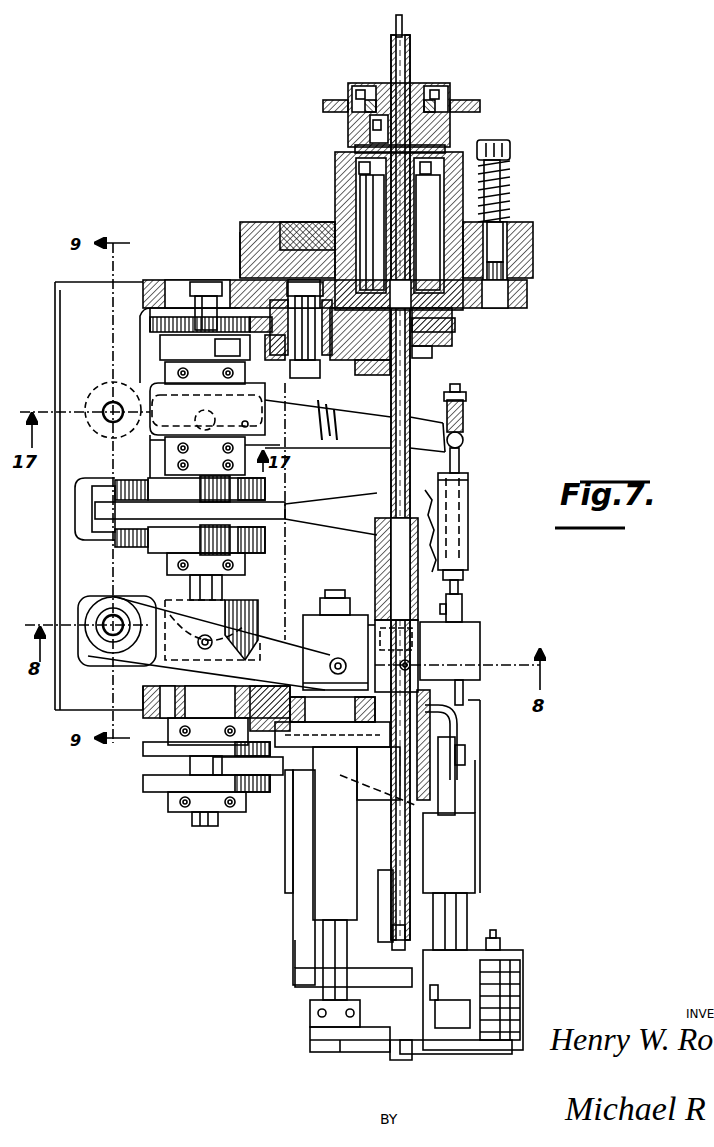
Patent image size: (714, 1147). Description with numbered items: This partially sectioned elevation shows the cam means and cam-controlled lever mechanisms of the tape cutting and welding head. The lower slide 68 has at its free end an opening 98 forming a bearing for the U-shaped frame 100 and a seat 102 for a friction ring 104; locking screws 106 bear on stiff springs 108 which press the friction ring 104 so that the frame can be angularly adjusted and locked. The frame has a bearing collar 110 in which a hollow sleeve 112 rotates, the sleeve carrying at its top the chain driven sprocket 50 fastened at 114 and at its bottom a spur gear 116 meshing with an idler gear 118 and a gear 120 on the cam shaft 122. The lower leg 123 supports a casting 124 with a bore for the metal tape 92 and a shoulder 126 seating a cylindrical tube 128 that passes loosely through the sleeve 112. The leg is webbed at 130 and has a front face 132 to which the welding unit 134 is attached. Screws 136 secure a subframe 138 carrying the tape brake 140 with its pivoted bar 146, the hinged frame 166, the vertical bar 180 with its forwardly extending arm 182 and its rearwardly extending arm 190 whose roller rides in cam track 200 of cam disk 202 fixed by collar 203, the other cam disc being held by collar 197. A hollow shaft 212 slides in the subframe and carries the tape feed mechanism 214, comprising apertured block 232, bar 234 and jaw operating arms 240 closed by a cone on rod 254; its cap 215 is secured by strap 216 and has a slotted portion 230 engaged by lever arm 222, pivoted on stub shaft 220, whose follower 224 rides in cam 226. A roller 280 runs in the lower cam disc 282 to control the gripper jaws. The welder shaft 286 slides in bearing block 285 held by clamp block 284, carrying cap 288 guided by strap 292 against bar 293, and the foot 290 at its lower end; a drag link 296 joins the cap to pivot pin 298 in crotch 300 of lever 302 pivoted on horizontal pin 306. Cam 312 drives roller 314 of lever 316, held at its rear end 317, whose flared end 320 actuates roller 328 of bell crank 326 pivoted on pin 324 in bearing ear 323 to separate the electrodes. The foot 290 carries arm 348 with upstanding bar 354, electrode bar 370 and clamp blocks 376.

The metal tape 92 is at (394, 22).
The chain driven sprocket 50 is at (350, 100).
The hub fastening 114 is at (372, 130).
The bearing collar 110 is at (345, 155).
The hollow sleeve 112 is at (362, 205).
The locking screws 106 is at (490, 140).
The stiff springs 108 is at (505, 172).
The friction ring 104 is at (285, 225).
The lower slide 68 is at (250, 230).
The opening 98 is at (338, 252).
The seat 102 is at (525, 250).
The U-shaped frame 100 is at (55, 310).
The spur gear 116 is at (455, 325).
The idler gear 118 is at (338, 318).
The cam shaft gear 120 is at (170, 300).
The cam shaft 122 is at (205, 285).
The cylindrical tube 128 is at (411, 392).
The horizontal pin 306 is at (108, 400).
The lever 302 is at (355, 418).
The pivot pin 298 is at (466, 440).
The crotch 300 is at (464, 443).
The drag link 296 is at (460, 465).
The flared end 320 is at (468, 507).
The roller 328 is at (466, 550).
The lever 316 is at (410, 494).
The bell crank 326 is at (465, 575).
The pin 324 is at (460, 592).
The bearing ear 323 is at (463, 616).
The grooved disc cam 312 is at (266, 488).
The roller 314 is at (200, 492).
The rear end of lever 317 is at (95, 512).
The casting 124 is at (375, 510).
The shoulder 126 is at (380, 562).
The roller 280 is at (200, 548).
The lower cam disc 282 is at (246, 553).
The lever arm 222 is at (172, 602).
The cam 226 is at (258, 598).
The cam follower 224 is at (212, 628).
The stub shaft 220 is at (105, 598).
The lower leg 123 is at (272, 685).
The cap 215 is at (308, 625).
The combined strap and guide arm 216 is at (362, 614).
The rod 254 is at (330, 597).
The slotted portion 230 is at (352, 650).
The combined guide arm and strap 292 is at (418, 640).
The bar 293 is at (418, 662).
The cap 288 is at (480, 648).
The welder shaft 286 is at (470, 695).
The bearing block 285 is at (465, 718).
The clamp block 284 is at (462, 740).
The collar 203 is at (210, 720).
The cam disk 202 is at (145, 756).
The cam track 200 is at (145, 783).
The rearwardly extending arm 190 is at (255, 793).
The collar 197 is at (170, 812).
The U-shaped frame 166 is at (285, 822).
The subframe 138 is at (322, 860).
The vertical bar 180 is at (300, 922).
The web 130 is at (338, 762).
The screws 136 is at (370, 748).
The front face 132 is at (445, 808).
The welding unit 134 is at (482, 865).
The second bar 146 is at (384, 872).
The tape brake 140 is at (380, 930).
The forwardly extending arm 182 is at (378, 972).
The hollow shaft 212 is at (322, 992).
The bar 234 is at (310, 1010).
The tape feed mechanism 214 is at (306, 1022).
The apertured block 232 is at (312, 1046).
The operating arms 240 is at (340, 1042).
The clamp blocks 376 is at (396, 1060).
The arm 348 is at (446, 1040).
The electrode carrying bar 370 is at (486, 1054).
The upstanding bar 354 is at (522, 998).
The foot 290 is at (500, 962).